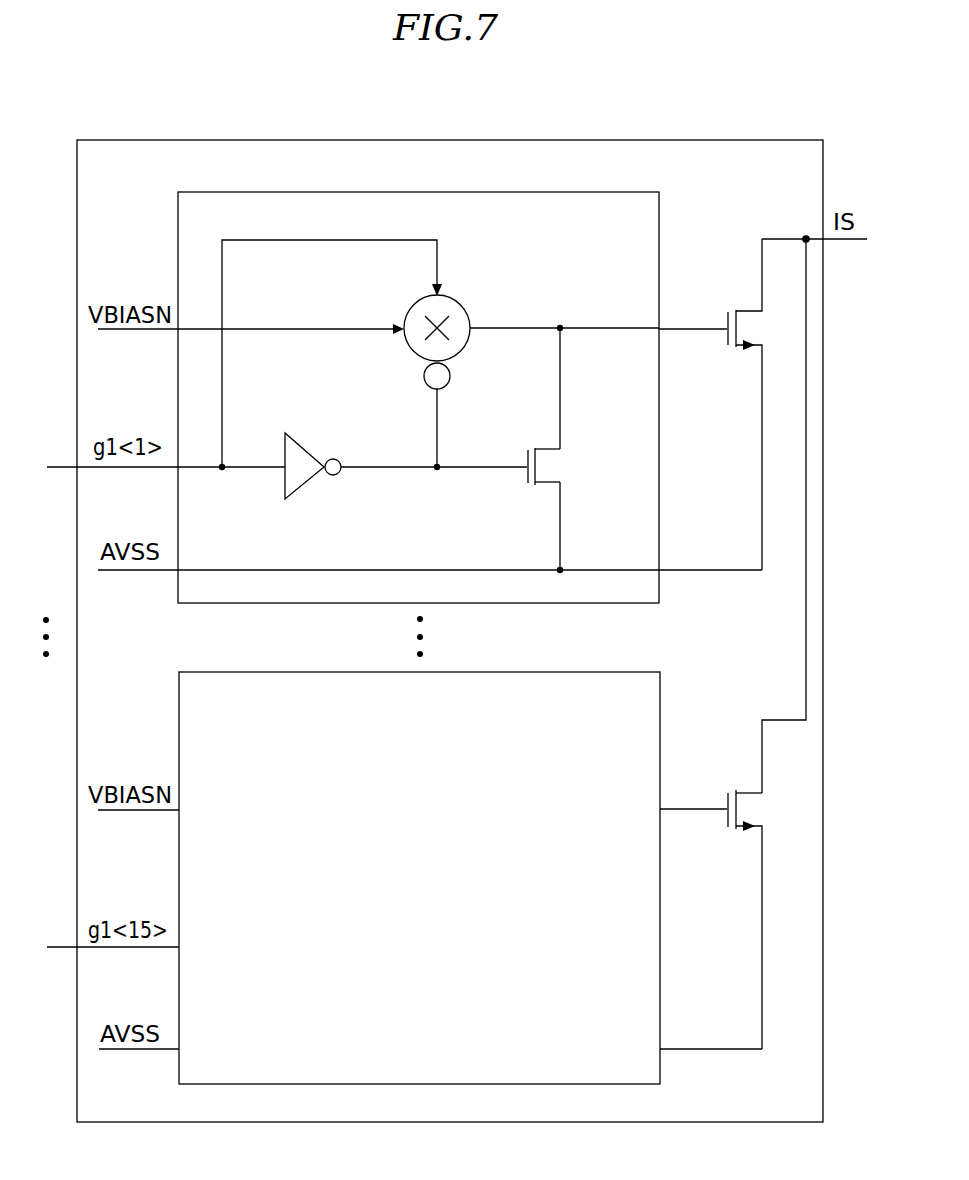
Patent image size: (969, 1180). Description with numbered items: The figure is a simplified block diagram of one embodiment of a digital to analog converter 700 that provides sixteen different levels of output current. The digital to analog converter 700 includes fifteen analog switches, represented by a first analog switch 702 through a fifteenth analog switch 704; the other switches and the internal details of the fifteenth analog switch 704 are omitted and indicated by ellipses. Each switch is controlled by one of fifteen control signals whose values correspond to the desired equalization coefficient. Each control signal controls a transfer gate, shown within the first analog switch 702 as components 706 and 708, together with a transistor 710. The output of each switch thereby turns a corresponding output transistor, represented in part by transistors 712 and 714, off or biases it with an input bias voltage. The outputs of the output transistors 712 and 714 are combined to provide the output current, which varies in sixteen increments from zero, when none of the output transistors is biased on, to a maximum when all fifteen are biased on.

The digital to analog converter 700 is at (655, 140).
The analog switch #1 702 is at (454, 377).
The analog switch #15 704 is at (567, 672).
The transfer gate component 706 is at (462, 305).
The transfer gate component 708 is at (307, 483).
The transistor 710 is at (560, 465).
The output transistor 712 is at (735, 295).
The output transistor 714 is at (735, 773).